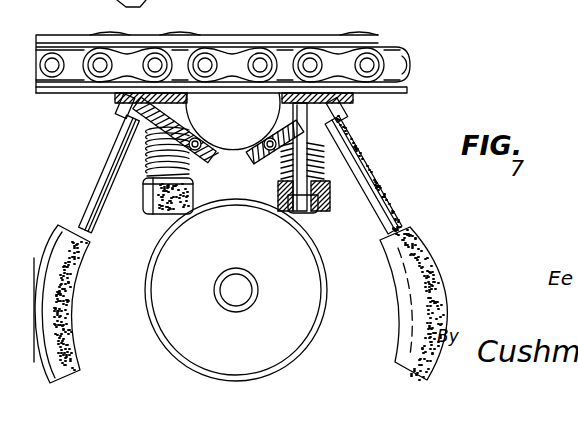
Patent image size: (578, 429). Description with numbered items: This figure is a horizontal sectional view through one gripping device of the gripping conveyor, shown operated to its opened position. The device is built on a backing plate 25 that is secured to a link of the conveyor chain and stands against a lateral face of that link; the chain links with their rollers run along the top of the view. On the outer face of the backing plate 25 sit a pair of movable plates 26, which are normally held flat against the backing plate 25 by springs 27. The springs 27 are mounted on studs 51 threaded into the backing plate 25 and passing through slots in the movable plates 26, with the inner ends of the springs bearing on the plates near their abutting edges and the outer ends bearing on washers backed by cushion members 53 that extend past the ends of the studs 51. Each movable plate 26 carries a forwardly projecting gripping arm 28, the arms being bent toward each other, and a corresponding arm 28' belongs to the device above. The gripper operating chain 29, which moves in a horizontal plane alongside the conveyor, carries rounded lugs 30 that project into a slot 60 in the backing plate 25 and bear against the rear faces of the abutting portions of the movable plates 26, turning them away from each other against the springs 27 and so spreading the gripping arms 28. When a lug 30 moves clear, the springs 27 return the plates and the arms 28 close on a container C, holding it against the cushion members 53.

The backing plate 25 is at (352, 96).
The movable plate 26 is at (249, 154).
The spring 27 is at (327, 174).
The gripping arm 28 is at (245, 304).
The upper shoe pad 28' is at (313, 12).
The gripping device operating chain 29 is at (340, 62).
The lug 30 is at (250, 102).
The stud 51 is at (283, 146).
The cushion member 53 is at (328, 208).
The slot 60 is at (188, 97).
The container C is at (307, 338).